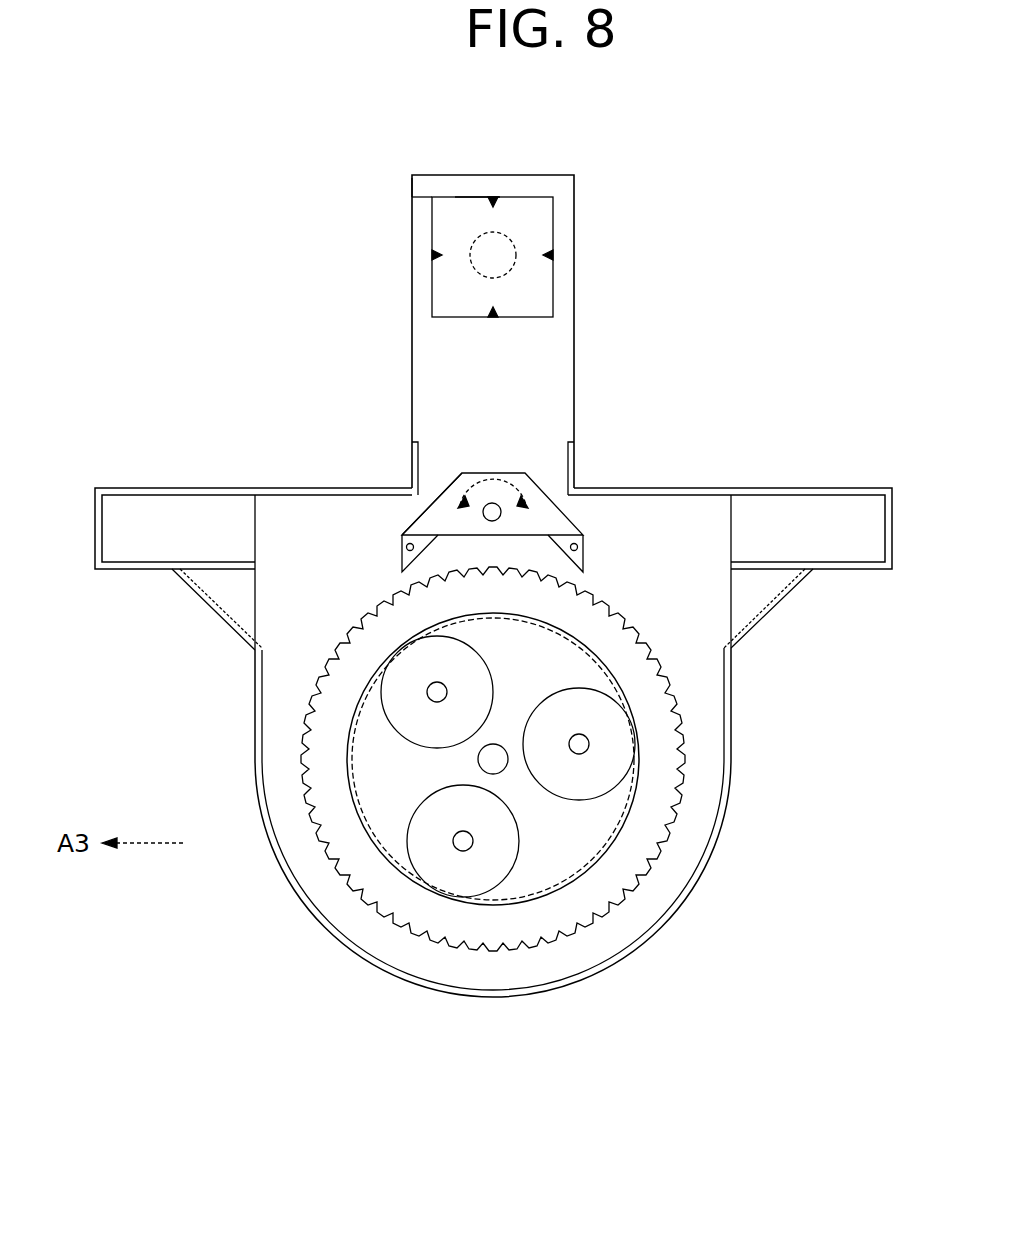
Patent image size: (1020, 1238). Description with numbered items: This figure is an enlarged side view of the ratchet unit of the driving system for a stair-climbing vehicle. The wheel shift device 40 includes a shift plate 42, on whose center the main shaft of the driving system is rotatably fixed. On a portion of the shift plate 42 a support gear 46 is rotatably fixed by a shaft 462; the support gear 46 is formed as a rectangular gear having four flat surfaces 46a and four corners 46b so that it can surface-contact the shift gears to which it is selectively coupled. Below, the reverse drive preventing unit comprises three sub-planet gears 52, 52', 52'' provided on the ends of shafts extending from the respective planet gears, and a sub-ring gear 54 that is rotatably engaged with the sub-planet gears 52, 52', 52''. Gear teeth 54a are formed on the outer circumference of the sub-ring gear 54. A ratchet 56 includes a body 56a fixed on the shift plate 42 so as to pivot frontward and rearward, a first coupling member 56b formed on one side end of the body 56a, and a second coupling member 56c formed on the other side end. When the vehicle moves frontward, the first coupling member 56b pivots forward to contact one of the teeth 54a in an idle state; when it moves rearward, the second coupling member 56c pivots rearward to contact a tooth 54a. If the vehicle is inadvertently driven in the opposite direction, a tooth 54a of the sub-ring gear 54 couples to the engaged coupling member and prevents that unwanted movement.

The wheel shift device 40 is at (553, 293).
The shift plate 42 is at (710, 542).
The support gear 46 is at (532, 208).
The flat surface 46a is at (458, 197).
The corner 46b is at (432, 197).
The shaft 462 is at (502, 250).
The sub-planet gear 52 is at (397, 906).
The sub-planet gear 52' is at (326, 704).
The sub-planet gear 52'' is at (693, 760).
The sub-ring gear 54 is at (535, 922).
The gear teeth 54a is at (673, 677).
The ratchet 56 is at (526, 472).
The body 56a is at (438, 500).
The first coupling member 56b is at (587, 552).
The second coupling member 56c is at (397, 552).